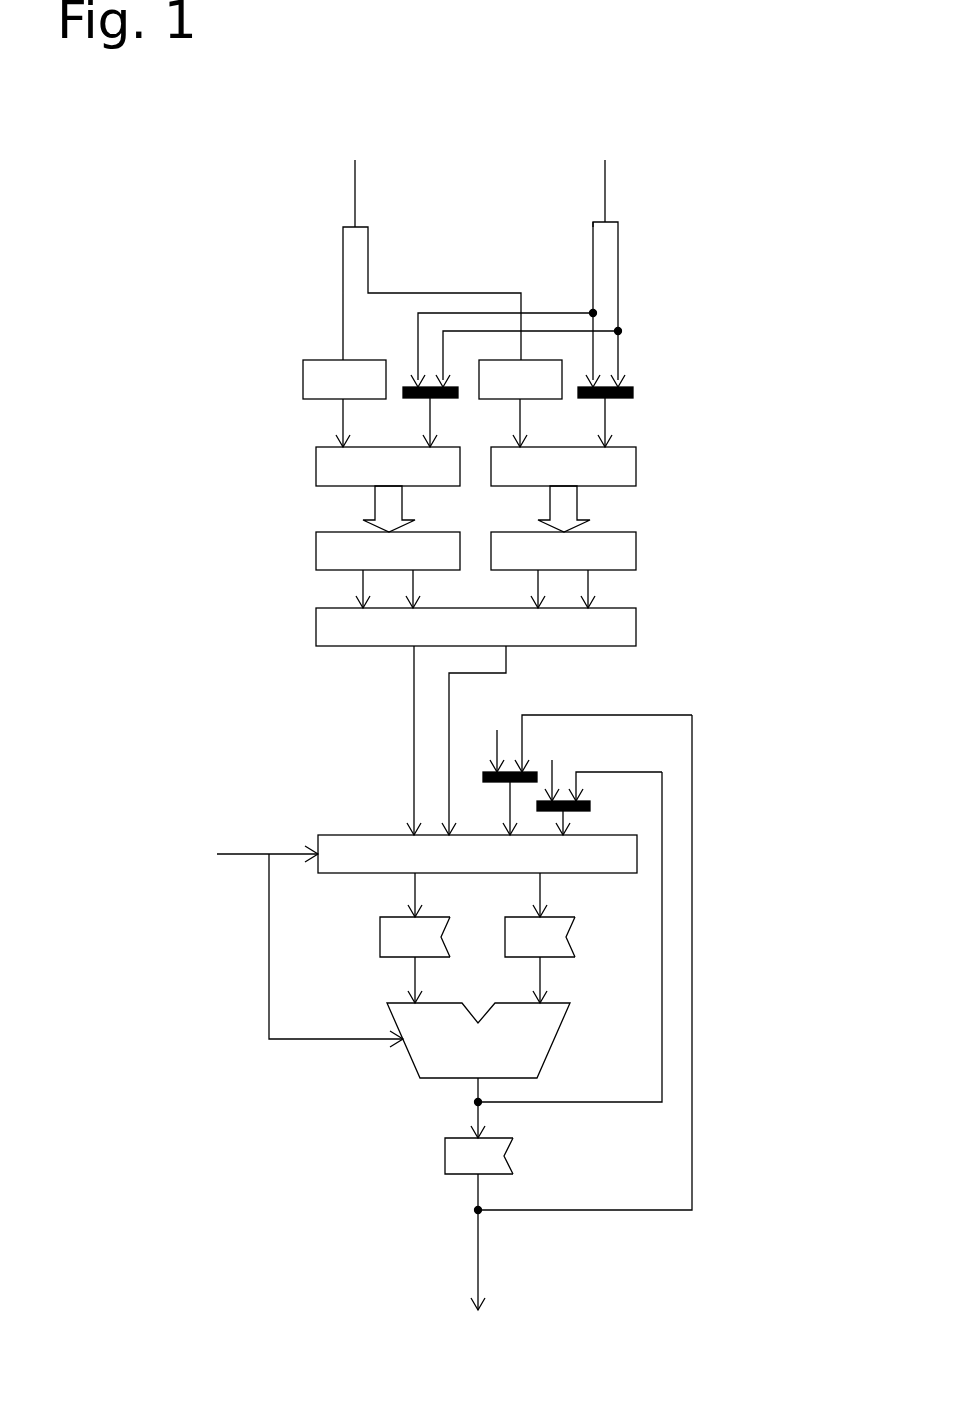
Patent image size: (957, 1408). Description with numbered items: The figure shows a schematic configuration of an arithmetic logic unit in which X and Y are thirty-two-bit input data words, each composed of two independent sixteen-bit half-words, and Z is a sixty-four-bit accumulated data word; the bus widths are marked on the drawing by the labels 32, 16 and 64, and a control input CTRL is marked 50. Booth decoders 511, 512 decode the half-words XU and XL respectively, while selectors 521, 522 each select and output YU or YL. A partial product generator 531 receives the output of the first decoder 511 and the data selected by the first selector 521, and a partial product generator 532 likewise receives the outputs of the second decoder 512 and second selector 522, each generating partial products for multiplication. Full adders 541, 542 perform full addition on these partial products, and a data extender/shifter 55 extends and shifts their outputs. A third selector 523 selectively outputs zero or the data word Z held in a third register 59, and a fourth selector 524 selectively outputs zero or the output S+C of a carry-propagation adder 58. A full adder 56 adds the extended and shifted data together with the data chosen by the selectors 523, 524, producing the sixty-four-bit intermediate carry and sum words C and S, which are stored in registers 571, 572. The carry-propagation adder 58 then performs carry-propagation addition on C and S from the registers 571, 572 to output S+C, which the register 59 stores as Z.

The control signal CTRL 50 is at (233, 857).
The Booth decoder 511 is at (303, 378).
The Booth decoder 512 is at (562, 369).
The selector 521 is at (408, 398).
The selector 522 is at (633, 393).
The third selector 523 is at (537, 777).
The fourth selector 524 is at (590, 806).
The partial product generator 531 is at (316, 465).
The partial product generator 532 is at (636, 469).
The full adder 541 is at (316, 550).
The full adder 542 is at (636, 552).
The data extender/shifter 55 is at (636, 625).
The full adder 56 is at (637, 852).
The register 571 is at (380, 937).
The register 572 is at (575, 937).
The carry-propagation adder 58 is at (553, 1042).
The register 59 is at (513, 1156).
The 16-bit bus 16 is at (624, 274).
The 32-bit input bus 32 is at (349, 177).
The 64-bit output bus 64 is at (473, 1262).